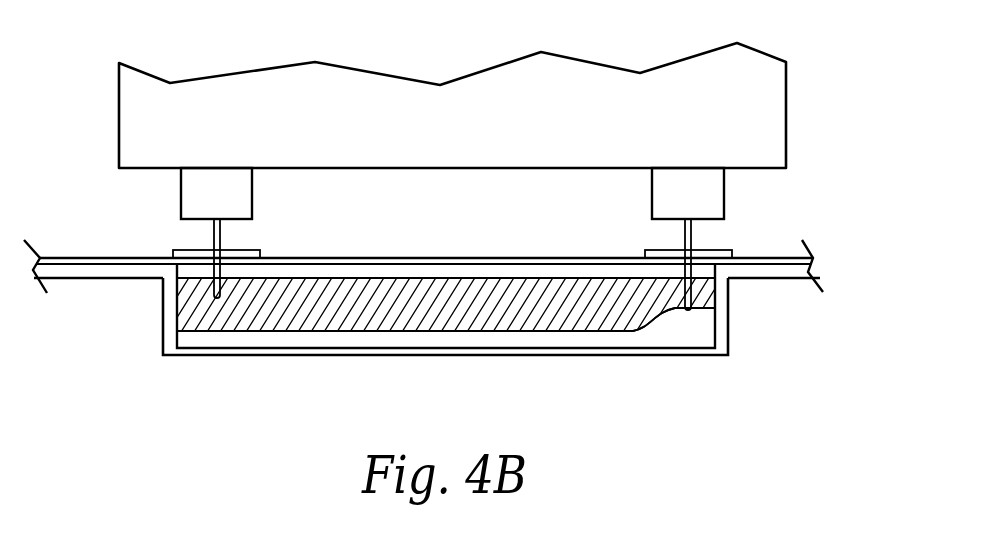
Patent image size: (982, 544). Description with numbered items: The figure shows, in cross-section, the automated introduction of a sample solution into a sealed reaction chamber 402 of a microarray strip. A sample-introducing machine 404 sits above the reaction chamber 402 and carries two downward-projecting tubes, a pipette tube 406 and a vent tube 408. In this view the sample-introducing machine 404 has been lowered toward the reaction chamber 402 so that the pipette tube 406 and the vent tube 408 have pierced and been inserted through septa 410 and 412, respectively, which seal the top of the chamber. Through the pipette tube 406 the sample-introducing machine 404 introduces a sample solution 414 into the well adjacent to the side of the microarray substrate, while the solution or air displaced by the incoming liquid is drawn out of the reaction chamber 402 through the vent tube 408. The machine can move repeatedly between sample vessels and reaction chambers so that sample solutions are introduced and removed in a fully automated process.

The reaction chamber 402 is at (472, 308).
The sample-introducing machine 404 is at (786, 108).
The pipette tube 406 is at (692, 233).
The vent tube 408 is at (222, 233).
The septum 410 is at (731, 258).
The septum 412 is at (182, 257).
The sample solution 414 is at (668, 331).